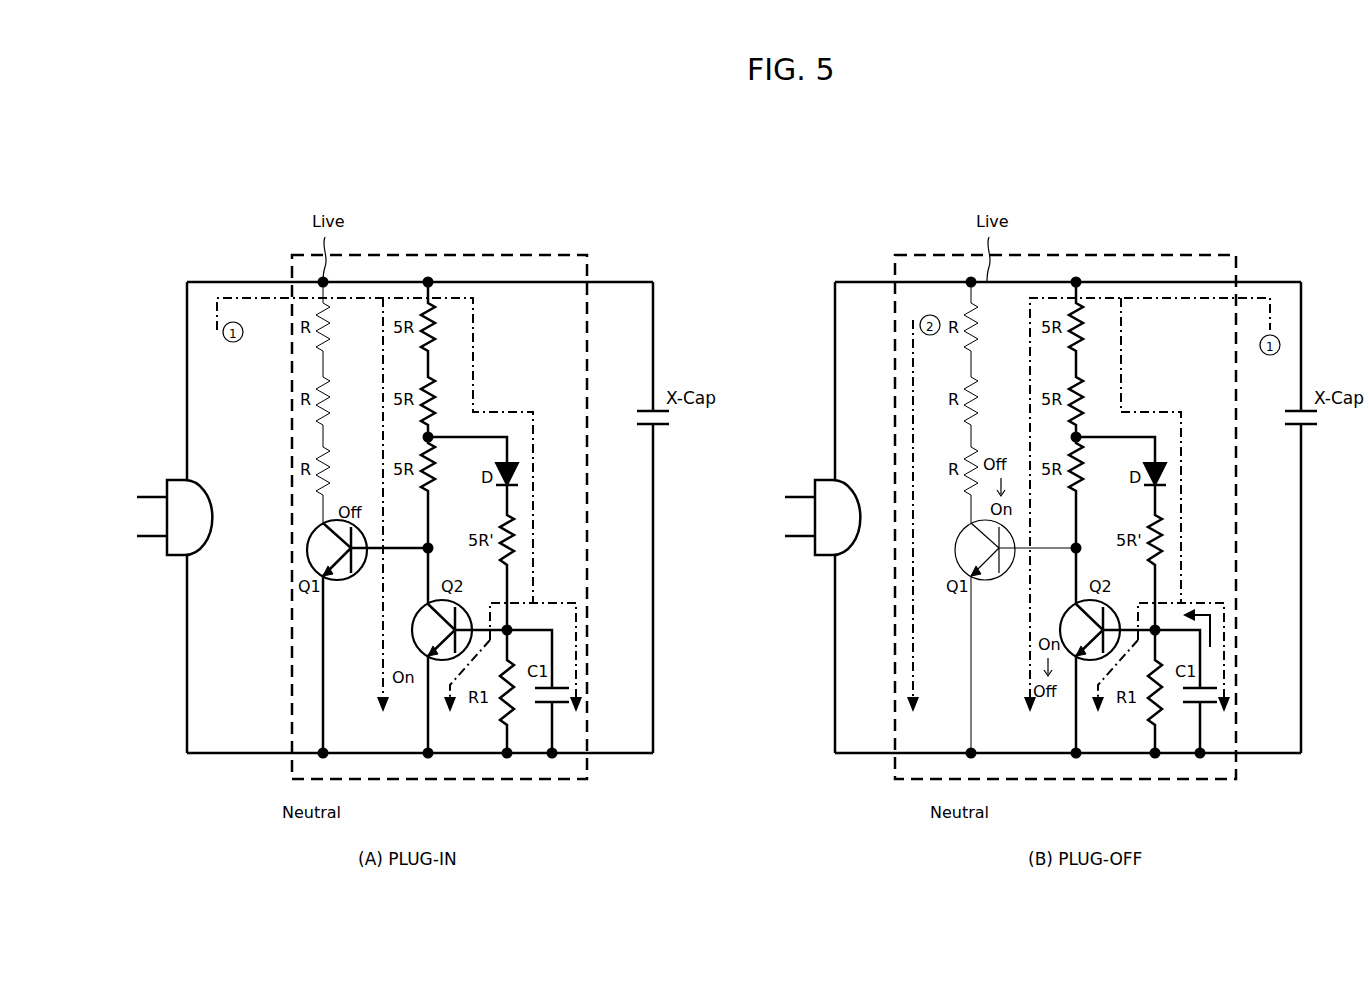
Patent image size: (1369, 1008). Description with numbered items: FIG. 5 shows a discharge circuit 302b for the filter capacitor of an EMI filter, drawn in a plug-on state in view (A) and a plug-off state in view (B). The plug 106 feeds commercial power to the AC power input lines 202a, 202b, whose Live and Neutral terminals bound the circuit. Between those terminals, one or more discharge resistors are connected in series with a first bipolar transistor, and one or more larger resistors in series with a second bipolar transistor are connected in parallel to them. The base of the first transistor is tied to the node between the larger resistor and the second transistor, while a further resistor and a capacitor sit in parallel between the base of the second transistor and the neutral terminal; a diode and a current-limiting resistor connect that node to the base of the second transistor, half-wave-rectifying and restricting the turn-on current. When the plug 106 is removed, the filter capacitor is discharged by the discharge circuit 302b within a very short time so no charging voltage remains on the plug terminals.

The AC power input line 202a is at (255, 282).
The AC power input line 202b is at (223, 753).
The discharge circuit 302b is at (490, 255).
The plug 106 is at (159, 490).